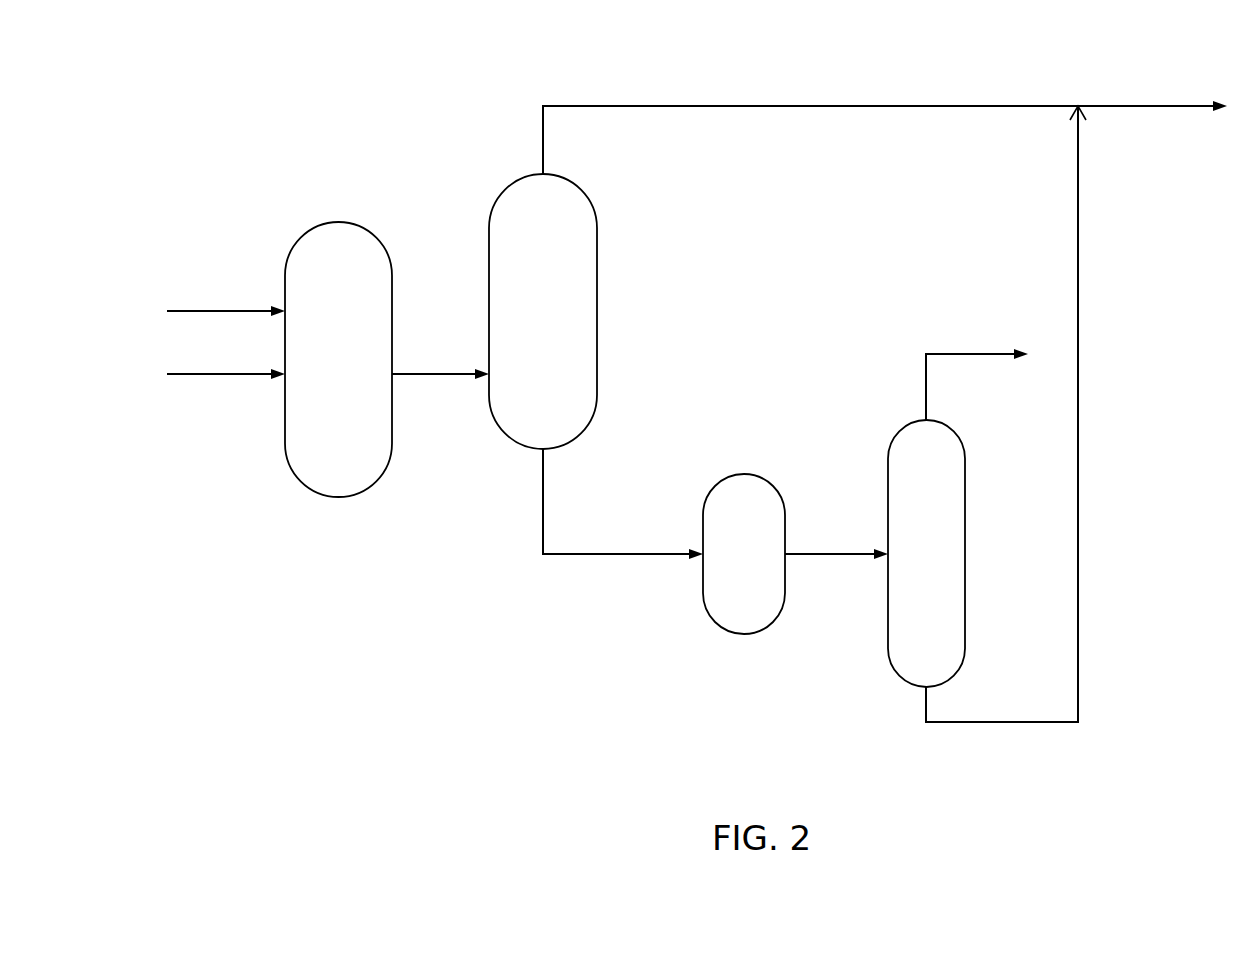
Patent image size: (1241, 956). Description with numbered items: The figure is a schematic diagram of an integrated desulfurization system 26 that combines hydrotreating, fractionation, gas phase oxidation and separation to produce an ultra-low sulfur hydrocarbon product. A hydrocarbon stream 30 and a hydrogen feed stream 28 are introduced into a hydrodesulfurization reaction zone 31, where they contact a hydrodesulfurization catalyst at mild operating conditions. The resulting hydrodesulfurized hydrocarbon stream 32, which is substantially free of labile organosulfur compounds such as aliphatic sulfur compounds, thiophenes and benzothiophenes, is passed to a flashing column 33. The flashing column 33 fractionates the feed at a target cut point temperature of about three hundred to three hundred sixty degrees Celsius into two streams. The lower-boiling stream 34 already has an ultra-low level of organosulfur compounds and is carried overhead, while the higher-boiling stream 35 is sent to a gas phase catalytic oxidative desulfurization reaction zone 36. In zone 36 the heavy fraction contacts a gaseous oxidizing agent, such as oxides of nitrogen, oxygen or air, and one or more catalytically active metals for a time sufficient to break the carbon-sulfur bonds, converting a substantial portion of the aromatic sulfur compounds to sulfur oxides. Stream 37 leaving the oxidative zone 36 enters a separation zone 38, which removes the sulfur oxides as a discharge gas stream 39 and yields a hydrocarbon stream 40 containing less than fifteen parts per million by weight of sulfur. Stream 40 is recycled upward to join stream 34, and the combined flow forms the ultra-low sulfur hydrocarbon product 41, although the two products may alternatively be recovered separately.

The integrated desulfurization system 26 is at (190, 106).
The hydrogen feed stream 28 is at (227, 310).
The hydrocarbon stream 30 is at (220, 373).
The hydrodesulfurization reaction zone 31 is at (349, 372).
The hydrodesulfurized hydrocarbon stream 32 is at (445, 373).
The flashing column 33 is at (554, 323).
The stream boiling below the target cut point 34 is at (666, 106).
The stream boiling above the target cut point 35 is at (637, 552).
The gas phase catalytic oxidative desulfurization reaction zone 36 is at (760, 566).
The stream from the gas phase catalytic oxidative desulfurization zone 37 is at (832, 551).
The separation zone 38 is at (940, 546).
The discharge gas stream 39 is at (961, 354).
The hydrocarbon stream 40 is at (1081, 623).
The hydrocarbon product 41 is at (1137, 106).